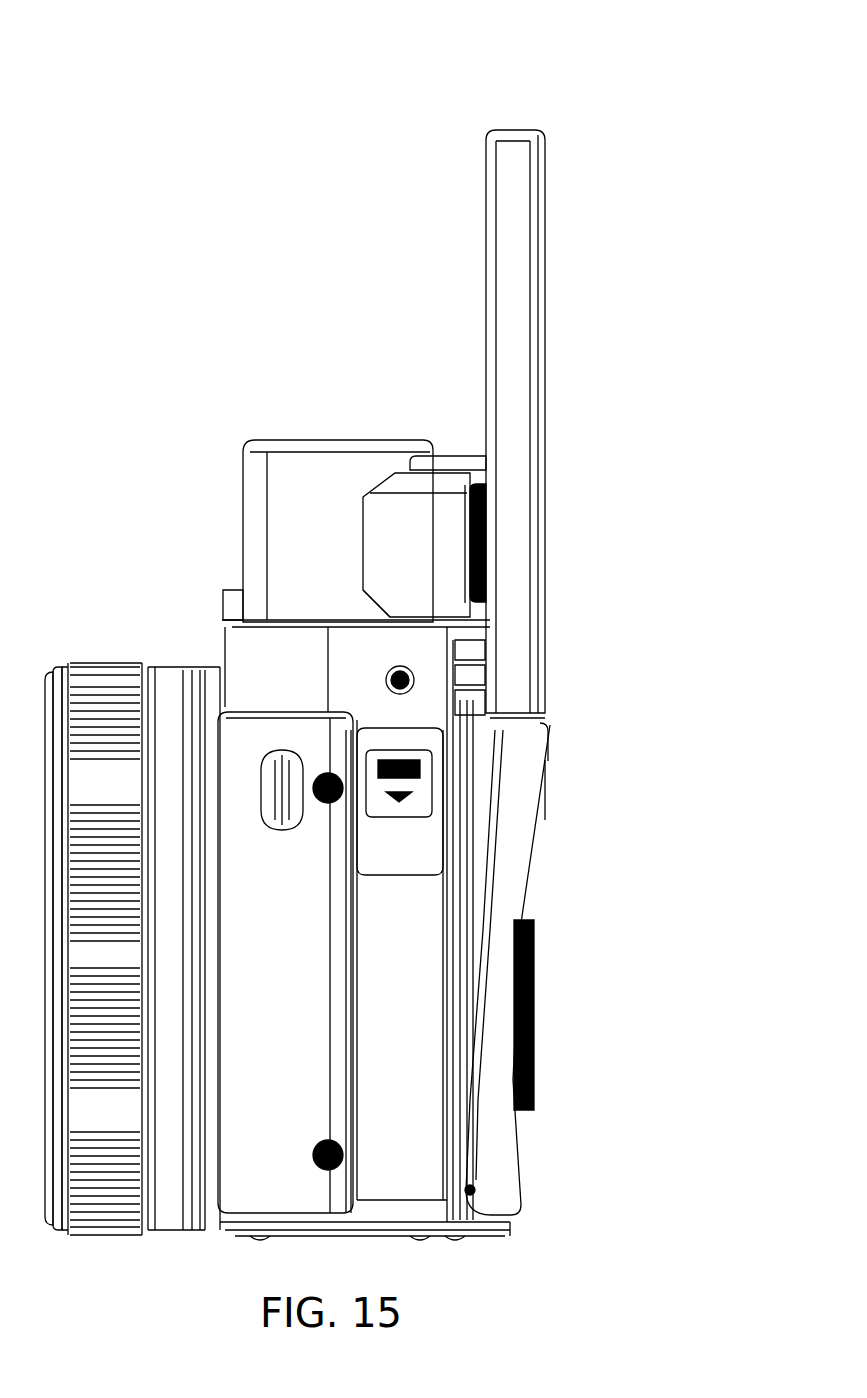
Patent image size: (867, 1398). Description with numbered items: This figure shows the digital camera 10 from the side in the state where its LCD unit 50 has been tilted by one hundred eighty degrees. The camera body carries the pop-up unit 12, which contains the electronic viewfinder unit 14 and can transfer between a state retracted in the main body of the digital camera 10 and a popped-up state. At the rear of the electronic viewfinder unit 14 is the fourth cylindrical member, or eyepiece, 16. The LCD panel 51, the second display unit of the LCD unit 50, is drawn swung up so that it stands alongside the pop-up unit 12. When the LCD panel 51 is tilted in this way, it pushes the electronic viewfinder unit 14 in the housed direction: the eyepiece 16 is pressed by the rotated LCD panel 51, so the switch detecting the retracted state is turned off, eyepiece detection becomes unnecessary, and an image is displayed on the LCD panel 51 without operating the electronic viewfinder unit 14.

The digital camera 10 is at (677, 101).
The pop-up unit 12 is at (310, 450).
The electronic viewfinder unit 14 is at (445, 460).
The fourth cylindrical member (eyepiece) 16 is at (482, 483).
The LCD unit 50 is at (510, 130).
The LCD panel (second display unit) 51 is at (490, 230).